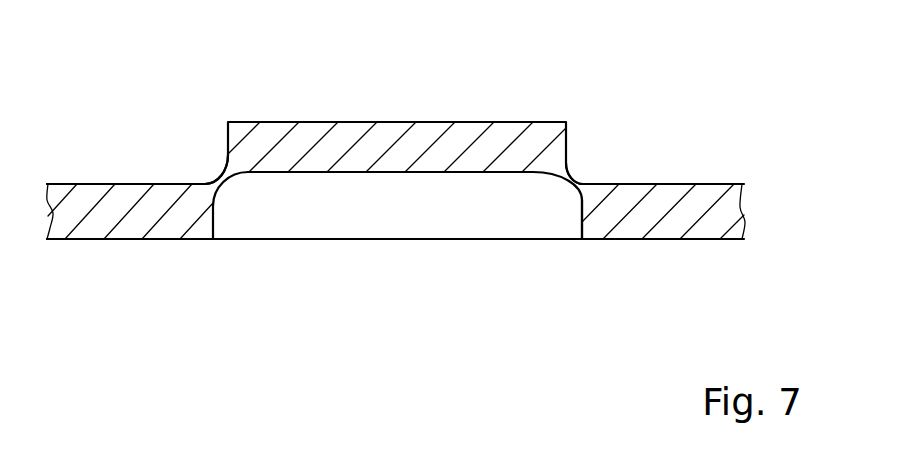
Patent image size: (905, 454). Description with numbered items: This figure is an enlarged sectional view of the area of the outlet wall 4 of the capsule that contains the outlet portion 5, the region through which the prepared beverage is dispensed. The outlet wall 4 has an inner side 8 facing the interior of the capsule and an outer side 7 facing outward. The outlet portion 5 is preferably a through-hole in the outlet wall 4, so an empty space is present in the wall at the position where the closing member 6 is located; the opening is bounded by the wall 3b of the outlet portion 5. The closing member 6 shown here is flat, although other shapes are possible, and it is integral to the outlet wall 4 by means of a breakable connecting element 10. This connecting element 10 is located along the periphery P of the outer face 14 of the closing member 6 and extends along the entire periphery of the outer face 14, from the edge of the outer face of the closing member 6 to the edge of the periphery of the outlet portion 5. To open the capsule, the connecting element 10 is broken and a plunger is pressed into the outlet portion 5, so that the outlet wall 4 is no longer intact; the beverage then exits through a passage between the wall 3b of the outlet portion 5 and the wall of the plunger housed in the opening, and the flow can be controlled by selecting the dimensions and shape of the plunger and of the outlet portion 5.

The outlet wall 4 is at (712, 184).
The inner side 8 is at (102, 184).
The outer side 7 is at (87, 239).
The closing member 6 is at (425, 140).
The outlet portion 5 is at (489, 245).
The outer face 14 is at (357, 185).
The wall of the outlet portion 3b is at (580, 213).
The breakable connecting element 10 is at (576, 176).
The periphery P is at (196, 150).